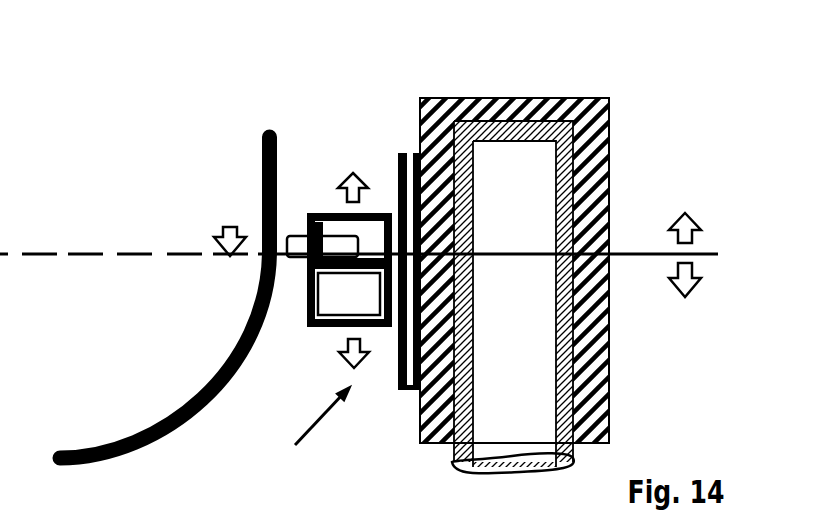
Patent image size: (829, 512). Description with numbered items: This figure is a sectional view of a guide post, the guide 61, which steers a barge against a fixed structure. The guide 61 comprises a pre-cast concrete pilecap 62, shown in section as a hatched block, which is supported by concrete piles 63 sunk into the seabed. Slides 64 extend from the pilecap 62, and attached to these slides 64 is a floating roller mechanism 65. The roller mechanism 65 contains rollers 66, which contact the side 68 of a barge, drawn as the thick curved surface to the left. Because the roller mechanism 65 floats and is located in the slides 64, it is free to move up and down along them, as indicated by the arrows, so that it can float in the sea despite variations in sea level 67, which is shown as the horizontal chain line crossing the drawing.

The guide 61 is at (309, 435).
The pre-cast concrete pilecap 62 is at (553, 98).
The concrete piles 63 is at (513, 297).
The slides 64 is at (412, 152).
The floating roller mechanism 65 is at (377, 228).
The rollers 66 is at (302, 245).
The sea level 67 is at (229, 227).
The side of a barge 68 is at (262, 178).